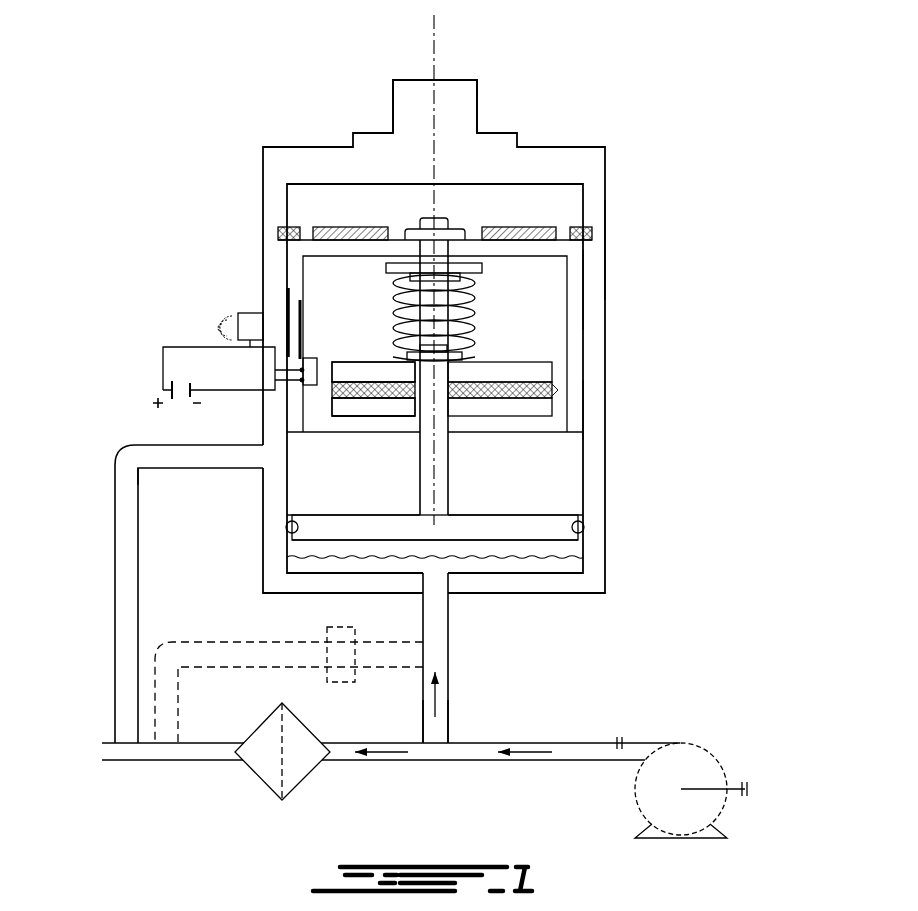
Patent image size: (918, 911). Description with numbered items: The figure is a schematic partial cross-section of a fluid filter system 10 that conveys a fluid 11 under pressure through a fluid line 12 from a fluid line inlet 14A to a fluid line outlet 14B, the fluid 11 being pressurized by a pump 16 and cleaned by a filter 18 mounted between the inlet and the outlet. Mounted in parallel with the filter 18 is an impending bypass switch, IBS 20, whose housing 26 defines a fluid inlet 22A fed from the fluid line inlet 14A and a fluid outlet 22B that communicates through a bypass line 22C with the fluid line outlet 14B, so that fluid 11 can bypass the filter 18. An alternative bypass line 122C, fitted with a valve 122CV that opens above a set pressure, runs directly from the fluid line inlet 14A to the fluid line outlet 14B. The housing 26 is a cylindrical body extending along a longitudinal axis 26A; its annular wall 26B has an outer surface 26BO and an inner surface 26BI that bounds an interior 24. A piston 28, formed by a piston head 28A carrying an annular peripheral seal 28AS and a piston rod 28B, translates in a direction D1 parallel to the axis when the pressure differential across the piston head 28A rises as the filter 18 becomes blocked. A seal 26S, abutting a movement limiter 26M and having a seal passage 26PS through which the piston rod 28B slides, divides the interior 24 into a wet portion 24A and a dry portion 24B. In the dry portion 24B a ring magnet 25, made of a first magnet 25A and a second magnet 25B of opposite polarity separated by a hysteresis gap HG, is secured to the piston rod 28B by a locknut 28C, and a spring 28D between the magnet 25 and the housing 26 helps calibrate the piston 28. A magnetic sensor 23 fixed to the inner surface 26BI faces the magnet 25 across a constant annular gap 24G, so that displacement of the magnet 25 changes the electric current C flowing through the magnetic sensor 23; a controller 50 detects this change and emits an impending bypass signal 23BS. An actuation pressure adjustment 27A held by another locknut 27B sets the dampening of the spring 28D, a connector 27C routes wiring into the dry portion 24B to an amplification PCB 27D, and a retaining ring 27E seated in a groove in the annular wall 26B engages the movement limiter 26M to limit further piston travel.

The fluid filter system 10 is at (648, 652).
The fluid 11 is at (548, 577).
The fluid line 12 is at (457, 765).
The fluid line inlet 14A is at (447, 723).
The fluid line outlet 14B is at (122, 751).
The pump 16 is at (697, 761).
The filter 18 is at (293, 771).
The impending bypass switch (IBS) 20 is at (625, 150).
The fluid inlet 22A is at (450, 596).
The fluid outlet 22B is at (271, 473).
The bypass line 22C is at (113, 521).
The magnetic sensor 23 is at (290, 300).
The impending bypass signal 23BS is at (212, 308).
The interior 24 is at (551, 462).
The wet portion 24A is at (408, 507).
The dry portion 24B is at (353, 285).
The gap 24G is at (300, 411).
The magnet 25 is at (365, 416).
The first magnet 25A is at (345, 365).
The second magnet 25B is at (383, 412).
The housing 26 is at (606, 351).
The longitudinal axis 26A is at (440, 97).
The annular wall 26B is at (594, 277).
The outer surface 26BO is at (607, 251).
The inner surface 26BI is at (577, 301).
The movement limiter 26M is at (578, 409).
The seal 26S is at (560, 429).
The seal passage 26PS is at (545, 433).
The actuation pressure adjustment 27A is at (428, 218).
The locknut 27B is at (412, 231).
The connector 27C is at (413, 97).
The amplification PCB 27D is at (350, 226).
The retaining ring 27E is at (290, 236).
The piston 28 is at (585, 526).
The piston head 28A is at (548, 561).
The annular peripheral seal 28AS is at (548, 534).
The piston rod 28B is at (466, 502).
The locknut 28C is at (470, 357).
The spring 28D is at (586, 233).
The controller 50 is at (250, 313).
The alternative bypass line 122C is at (205, 641).
The valve 122CV is at (337, 628).
The electric current C is at (165, 347).
The direction D1 is at (482, 444).
The hysteresis gap HG is at (560, 391).